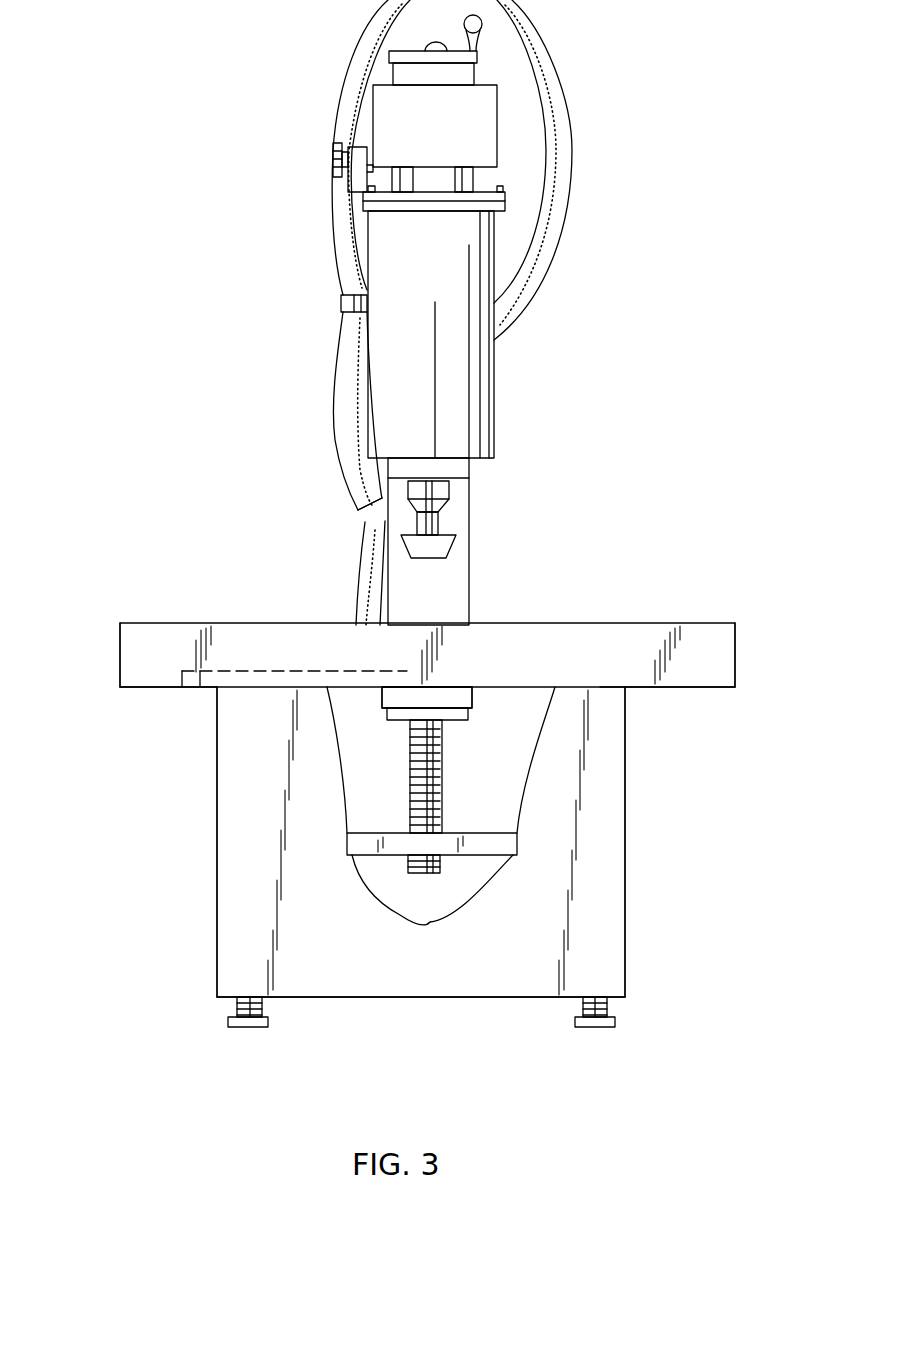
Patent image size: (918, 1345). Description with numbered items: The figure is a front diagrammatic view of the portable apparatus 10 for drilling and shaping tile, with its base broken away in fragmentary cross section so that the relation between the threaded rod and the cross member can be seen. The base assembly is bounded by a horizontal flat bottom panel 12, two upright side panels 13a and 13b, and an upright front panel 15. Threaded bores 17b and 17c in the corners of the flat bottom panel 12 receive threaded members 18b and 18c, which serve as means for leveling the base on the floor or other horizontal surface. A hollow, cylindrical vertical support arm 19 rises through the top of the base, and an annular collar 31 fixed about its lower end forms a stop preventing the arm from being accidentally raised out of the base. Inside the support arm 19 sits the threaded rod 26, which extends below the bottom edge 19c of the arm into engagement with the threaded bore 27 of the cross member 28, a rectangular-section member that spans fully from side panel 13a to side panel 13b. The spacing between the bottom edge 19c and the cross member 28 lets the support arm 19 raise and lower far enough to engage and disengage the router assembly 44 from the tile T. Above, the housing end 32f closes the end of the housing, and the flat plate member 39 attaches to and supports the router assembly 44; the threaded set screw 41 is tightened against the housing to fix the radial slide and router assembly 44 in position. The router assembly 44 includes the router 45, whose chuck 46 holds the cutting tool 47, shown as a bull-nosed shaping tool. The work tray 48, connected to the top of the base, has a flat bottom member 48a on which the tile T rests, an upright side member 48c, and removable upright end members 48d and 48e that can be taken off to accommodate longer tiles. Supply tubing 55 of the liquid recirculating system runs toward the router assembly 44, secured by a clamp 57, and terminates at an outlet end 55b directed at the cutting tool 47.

The portable apparatus 10 is at (588, 313).
The flat bottom panel 12 is at (456, 1000).
The side panel 13a is at (217, 900).
The side panel 13b is at (627, 828).
The front panel 15 is at (235, 968).
The threaded bore 17b is at (263, 1000).
The threaded bore 17c is at (612, 1005).
The threaded member 18b is at (237, 1003).
The threaded member 18c is at (582, 1010).
The support arm 19 is at (455, 607).
The bottom edge 19c is at (396, 722).
The threaded rod 26 is at (440, 800).
The threaded bore 27 is at (445, 860).
The cross member 28 is at (495, 840).
The annular collar 31 is at (455, 700).
The housing end 32f is at (485, 131).
The flat plate member 39 is at (505, 200).
The threaded set screw 41 is at (333, 165).
The router assembly 44 is at (538, 462).
The router 45 is at (480, 413).
The chuck 46 is at (430, 490).
The cutting tool 47 is at (435, 550).
The work tray 48 is at (635, 618).
The flat bottom member 48a is at (163, 688).
The side member 48c is at (707, 672).
The end member 48d is at (120, 660).
The end member 48e is at (735, 658).
The supply tubing 55 is at (350, 333).
The outlet end 55b is at (370, 515).
The clamp 57 is at (343, 303).
The tile T is at (257, 678).